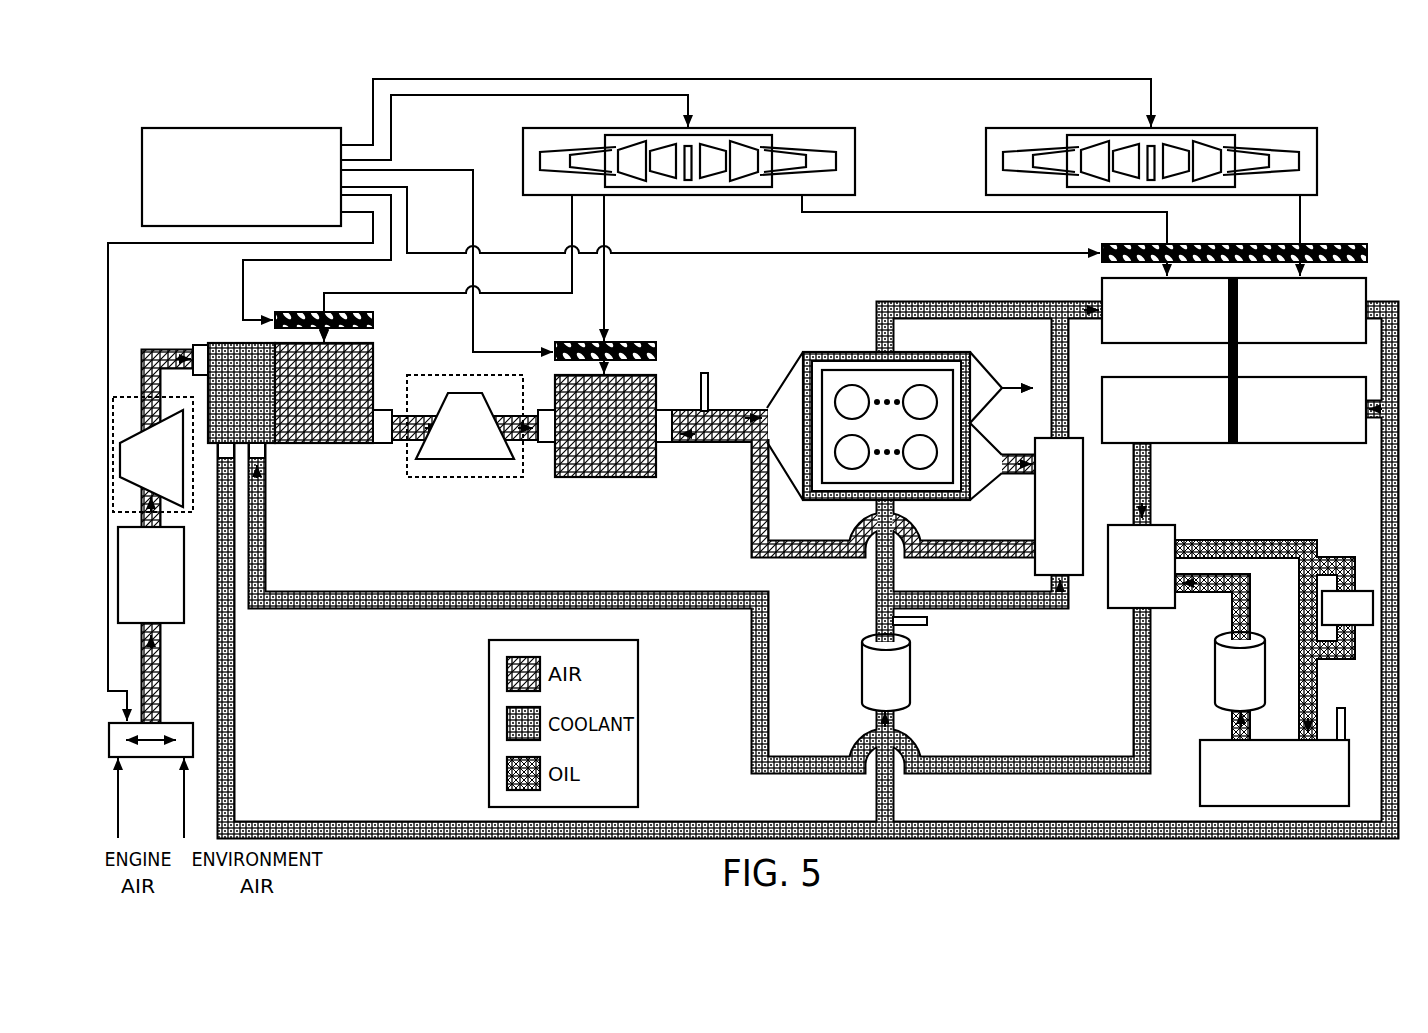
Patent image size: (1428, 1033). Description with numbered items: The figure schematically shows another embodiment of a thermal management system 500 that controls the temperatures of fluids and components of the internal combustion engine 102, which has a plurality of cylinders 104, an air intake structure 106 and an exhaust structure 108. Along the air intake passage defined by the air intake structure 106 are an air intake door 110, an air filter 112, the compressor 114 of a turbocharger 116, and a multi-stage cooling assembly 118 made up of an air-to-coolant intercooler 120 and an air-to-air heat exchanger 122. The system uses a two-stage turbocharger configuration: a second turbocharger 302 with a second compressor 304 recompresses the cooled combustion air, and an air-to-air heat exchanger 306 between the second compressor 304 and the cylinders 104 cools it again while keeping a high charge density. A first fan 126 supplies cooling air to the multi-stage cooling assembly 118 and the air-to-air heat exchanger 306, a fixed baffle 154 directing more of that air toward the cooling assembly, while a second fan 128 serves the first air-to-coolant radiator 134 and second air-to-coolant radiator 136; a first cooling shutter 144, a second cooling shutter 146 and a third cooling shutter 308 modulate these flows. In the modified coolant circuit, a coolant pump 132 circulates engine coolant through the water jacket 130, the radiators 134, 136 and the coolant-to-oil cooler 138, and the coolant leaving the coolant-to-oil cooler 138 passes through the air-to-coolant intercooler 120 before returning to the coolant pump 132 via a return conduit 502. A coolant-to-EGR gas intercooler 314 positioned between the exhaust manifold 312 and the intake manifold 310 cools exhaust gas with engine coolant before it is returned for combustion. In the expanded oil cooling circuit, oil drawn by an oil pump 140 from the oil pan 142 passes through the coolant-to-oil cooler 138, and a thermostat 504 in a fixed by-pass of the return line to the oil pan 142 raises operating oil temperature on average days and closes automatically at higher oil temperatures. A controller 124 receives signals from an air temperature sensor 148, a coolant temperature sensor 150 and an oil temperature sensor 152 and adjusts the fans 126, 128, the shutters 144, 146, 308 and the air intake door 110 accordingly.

The thermal management system 500 is at (1341, 114).
The internal combustion engine 102 is at (884, 386).
The cylinders 104 is at (848, 437).
The air intake structure 106 is at (191, 312).
The exhaust structure 108 is at (1014, 376).
The air intake door 110 is at (163, 723).
The air filter 112 is at (134, 587).
The compressor 114 is at (134, 470).
The turbocharger 116 is at (153, 413).
The multi-stage cooling assembly 118 is at (292, 424).
The air-to-coolant intercooler 120 is at (227, 404).
The air-to-air heat exchanger 122 is at (307, 404).
The controller 124 is at (321, 189).
The first fan 126 is at (790, 128).
The second fan 128 is at (1250, 128).
The water jacket 130 is at (911, 502).
The coolant pump 132 is at (870, 689).
The first air-to-coolant radiator 134 is at (1282, 322).
The second air-to-coolant radiator 136 is at (1282, 420).
The coolant-to-oil cooler 138 is at (1125, 579).
The oil pump 140 is at (1224, 686).
The oil pan 142 is at (1259, 785).
The first cooling shutter 144 is at (290, 311).
The second cooling shutter 146 is at (1358, 246).
The air temperature sensor 148 is at (704, 373).
The coolant temperature sensor 150 is at (928, 622).
The oil temperature sensor 152 is at (1340, 708).
The fixed baffle 154 is at (1239, 353).
The second turbocharger 302 is at (465, 440).
The second compressor 304 is at (449, 434).
The air-to-air heat exchanger 306 is at (590, 439).
The third cooling shutter 308 is at (636, 342).
The intake manifold 310 is at (732, 443).
The exhaust manifold 312 is at (1004, 487).
The coolant-to-EGR gas intercooler 314 is at (1043, 517).
The coolant return conduit 502 is at (1032, 757).
The thermostat 504 is at (1332, 620).